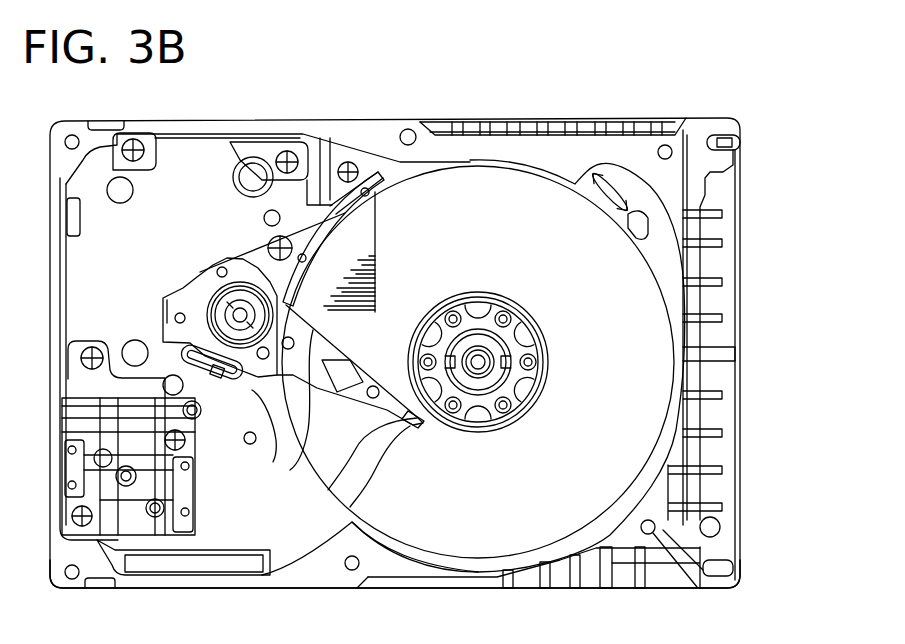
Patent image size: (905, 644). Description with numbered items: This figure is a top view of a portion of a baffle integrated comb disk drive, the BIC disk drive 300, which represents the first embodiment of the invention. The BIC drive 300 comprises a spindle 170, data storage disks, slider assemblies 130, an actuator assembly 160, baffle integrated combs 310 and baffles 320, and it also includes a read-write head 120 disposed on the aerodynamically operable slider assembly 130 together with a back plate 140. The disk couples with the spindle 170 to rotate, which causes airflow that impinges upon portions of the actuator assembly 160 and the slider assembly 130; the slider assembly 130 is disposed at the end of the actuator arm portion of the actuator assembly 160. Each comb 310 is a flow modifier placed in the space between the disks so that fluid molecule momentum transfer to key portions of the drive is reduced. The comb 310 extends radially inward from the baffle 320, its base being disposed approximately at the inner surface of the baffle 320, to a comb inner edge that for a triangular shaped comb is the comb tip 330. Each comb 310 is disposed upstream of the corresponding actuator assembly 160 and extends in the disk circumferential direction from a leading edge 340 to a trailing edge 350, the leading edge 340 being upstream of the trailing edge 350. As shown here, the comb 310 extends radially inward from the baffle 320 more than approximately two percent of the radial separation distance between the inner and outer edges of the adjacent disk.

The baffle integrated comb (BIC) disk drive 300 is at (752, 148).
The back plate 140 is at (742, 306).
The baffle integrated comb 310 is at (358, 260).
The leading edge 340 is at (380, 298).
The spindle 170 is at (493, 352).
The comb tip 330 is at (447, 405).
The baffle 320 is at (300, 234).
The actuator assembly 160 is at (276, 440).
The trailing edge 350 is at (300, 464).
The slider assembly 130 is at (330, 484).
The read-write head 120 is at (345, 519).